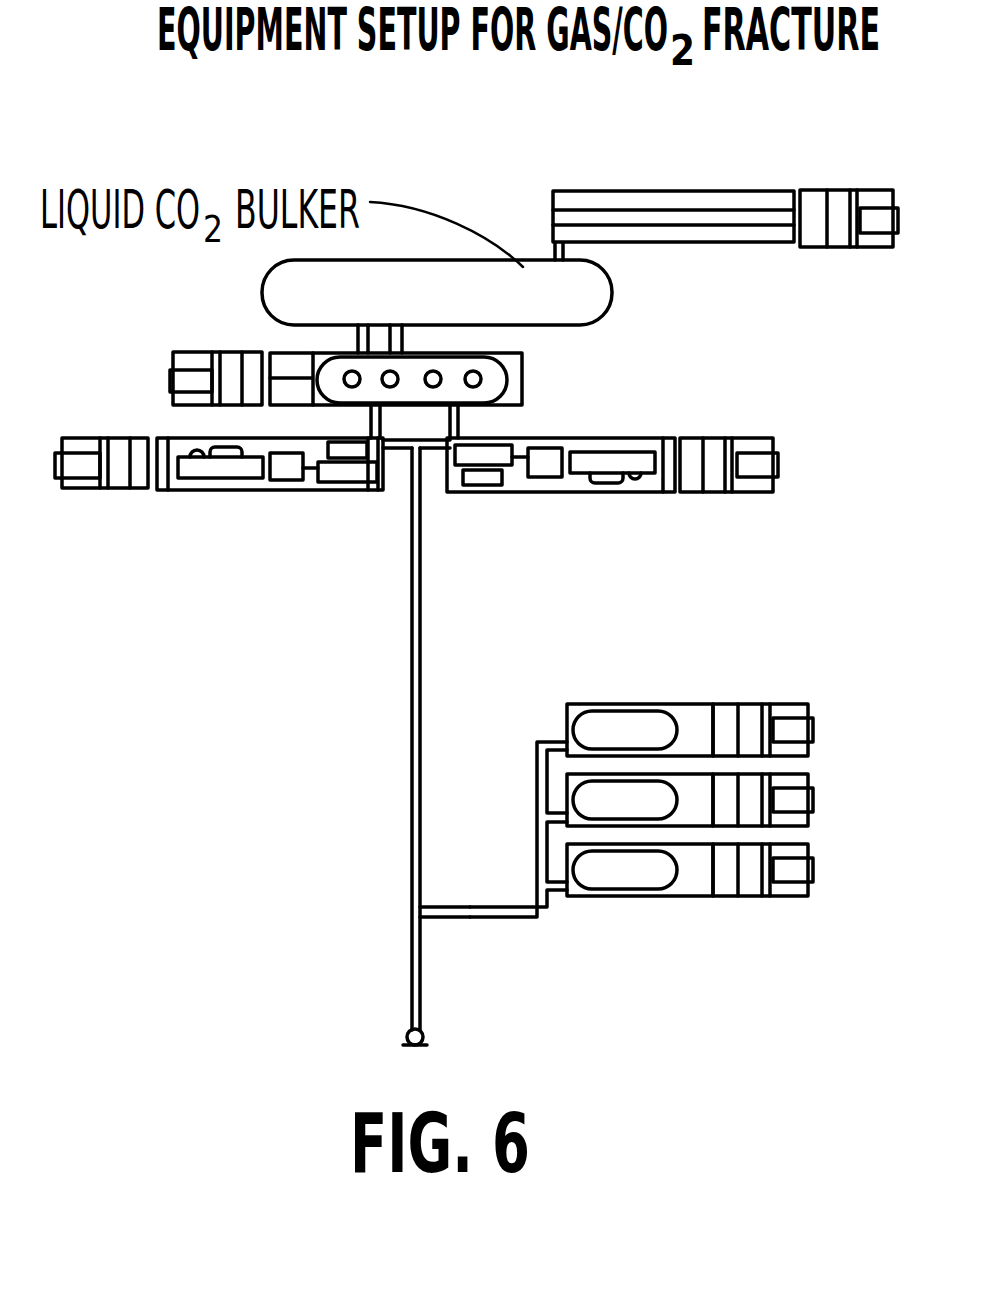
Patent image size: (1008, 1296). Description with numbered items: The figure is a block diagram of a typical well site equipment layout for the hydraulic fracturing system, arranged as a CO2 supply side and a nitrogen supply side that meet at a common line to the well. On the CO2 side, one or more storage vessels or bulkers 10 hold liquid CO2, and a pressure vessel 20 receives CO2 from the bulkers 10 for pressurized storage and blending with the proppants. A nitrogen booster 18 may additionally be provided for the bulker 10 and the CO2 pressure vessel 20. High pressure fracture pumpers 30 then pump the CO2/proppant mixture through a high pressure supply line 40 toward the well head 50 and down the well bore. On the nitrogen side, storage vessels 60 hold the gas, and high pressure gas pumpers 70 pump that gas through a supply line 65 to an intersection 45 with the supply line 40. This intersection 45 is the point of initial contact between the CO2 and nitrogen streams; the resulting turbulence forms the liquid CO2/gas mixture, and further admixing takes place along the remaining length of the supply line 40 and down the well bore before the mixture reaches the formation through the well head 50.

The nitrogen booster 18 is at (722, 198).
The bulker 10 is at (580, 295).
The pressure vessel 20 is at (493, 380).
The high pressure fracture pumpers 30 is at (218, 482).
The high pressure supply line 40 is at (420, 662).
The intersection 45 is at (410, 912).
The well head 50 is at (423, 1037).
The storage vessels 60 is at (604, 718).
The supply line 65 is at (477, 900).
The high pressure gas pumpers 70 is at (700, 717).